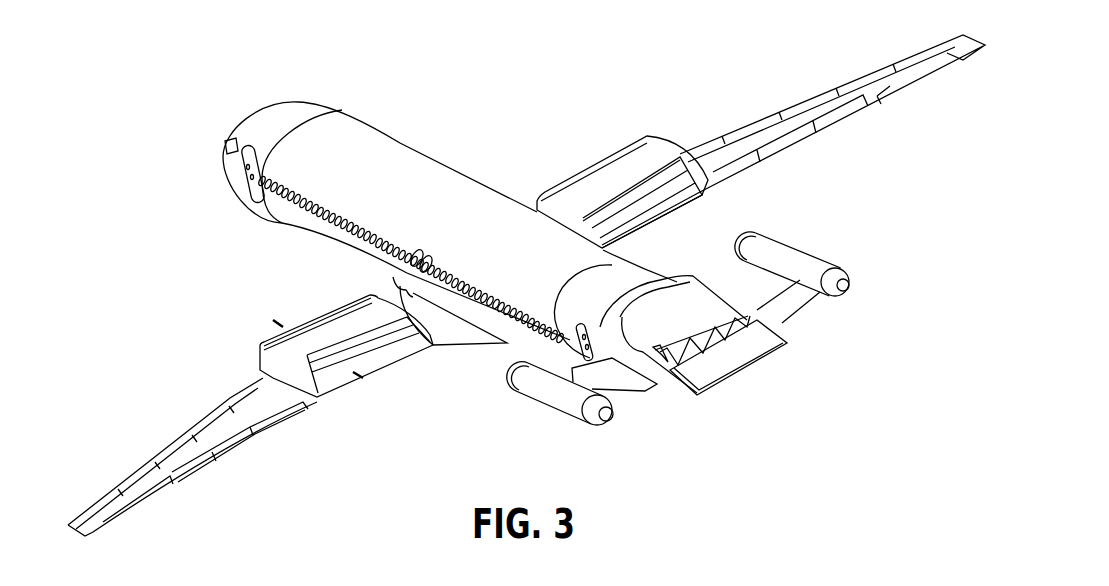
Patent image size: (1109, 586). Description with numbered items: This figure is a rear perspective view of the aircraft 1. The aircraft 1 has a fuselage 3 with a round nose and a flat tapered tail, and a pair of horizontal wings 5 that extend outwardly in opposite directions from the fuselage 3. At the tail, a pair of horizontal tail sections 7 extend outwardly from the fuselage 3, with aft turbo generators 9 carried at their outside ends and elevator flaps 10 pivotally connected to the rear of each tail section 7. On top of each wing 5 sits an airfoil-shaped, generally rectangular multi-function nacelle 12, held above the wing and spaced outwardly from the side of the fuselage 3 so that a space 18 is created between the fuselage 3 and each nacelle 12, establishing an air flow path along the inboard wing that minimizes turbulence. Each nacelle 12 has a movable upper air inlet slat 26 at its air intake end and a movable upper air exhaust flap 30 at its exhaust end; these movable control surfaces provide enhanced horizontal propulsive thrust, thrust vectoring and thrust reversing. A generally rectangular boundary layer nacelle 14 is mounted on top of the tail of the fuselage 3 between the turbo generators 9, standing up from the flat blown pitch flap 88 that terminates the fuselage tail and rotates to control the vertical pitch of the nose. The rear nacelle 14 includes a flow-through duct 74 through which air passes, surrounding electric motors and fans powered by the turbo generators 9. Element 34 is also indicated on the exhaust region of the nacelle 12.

The aircraft 1 is at (363, 96).
The fuselage 3 is at (402, 145).
The wings 5 is at (852, 115).
The tail sections 7 is at (747, 277).
The aft turbo generators 9 is at (803, 243).
The elevator flaps 10 is at (790, 310).
The multi-function nacelle 12 is at (594, 145).
The boundary layer nacelle 14 is at (729, 358).
The space 18 is at (452, 335).
The upper air inlet slat 26 is at (580, 177).
The upper air exhaust flap 30 is at (658, 190).
The flap panel edge 34 is at (628, 210).
The flow-through duct 74 is at (680, 336).
The blown pitch flap 88 is at (763, 353).